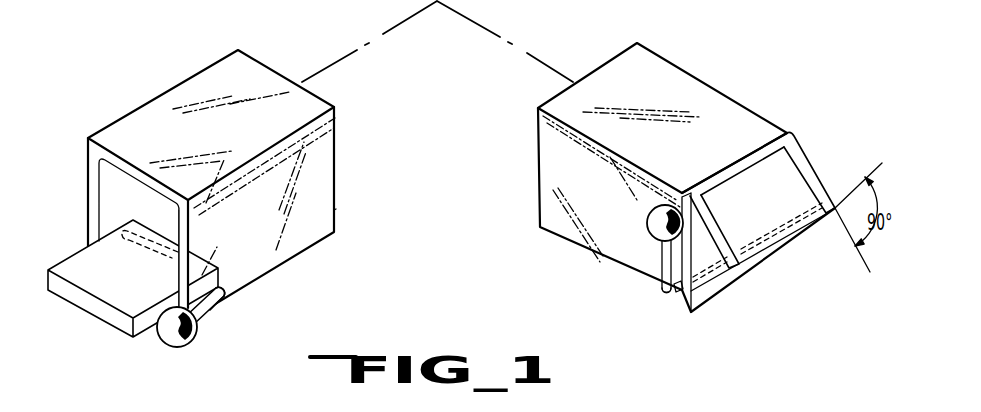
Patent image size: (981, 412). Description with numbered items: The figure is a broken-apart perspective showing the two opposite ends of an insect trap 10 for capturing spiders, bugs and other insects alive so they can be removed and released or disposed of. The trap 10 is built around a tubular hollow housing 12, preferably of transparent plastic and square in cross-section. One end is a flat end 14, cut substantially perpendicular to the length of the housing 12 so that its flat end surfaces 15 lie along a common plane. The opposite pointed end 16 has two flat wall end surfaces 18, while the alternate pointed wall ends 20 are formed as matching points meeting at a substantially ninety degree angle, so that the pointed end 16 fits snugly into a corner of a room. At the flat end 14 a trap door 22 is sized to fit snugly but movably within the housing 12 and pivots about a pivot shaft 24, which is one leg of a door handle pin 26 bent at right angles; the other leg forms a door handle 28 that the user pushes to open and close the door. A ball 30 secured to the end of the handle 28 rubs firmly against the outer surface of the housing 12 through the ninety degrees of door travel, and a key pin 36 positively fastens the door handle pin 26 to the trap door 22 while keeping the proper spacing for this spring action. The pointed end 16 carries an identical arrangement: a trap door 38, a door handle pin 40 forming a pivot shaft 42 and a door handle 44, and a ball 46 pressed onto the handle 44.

The trap 10 is at (443, 98).
The housing 12 is at (540, 210).
The flat end 14 is at (100, 118).
The flat end surfaces 15 is at (130, 170).
The pointed end 16 is at (819, 159).
The wall end surfaces 18 is at (750, 162).
The pointed wall ends 20 is at (818, 182).
The trap door 22 is at (113, 323).
The pivot shaft 24 is at (224, 290).
The door handle pin 26 is at (232, 303).
The door handle 28 is at (207, 318).
The ball 30 is at (197, 344).
The key pin 36 is at (165, 252).
The trap door 38 is at (767, 203).
The door handle pin 40 is at (653, 294).
The pivot shaft 42 is at (678, 293).
The door handle 44 is at (661, 262).
The ball 46 is at (647, 222).